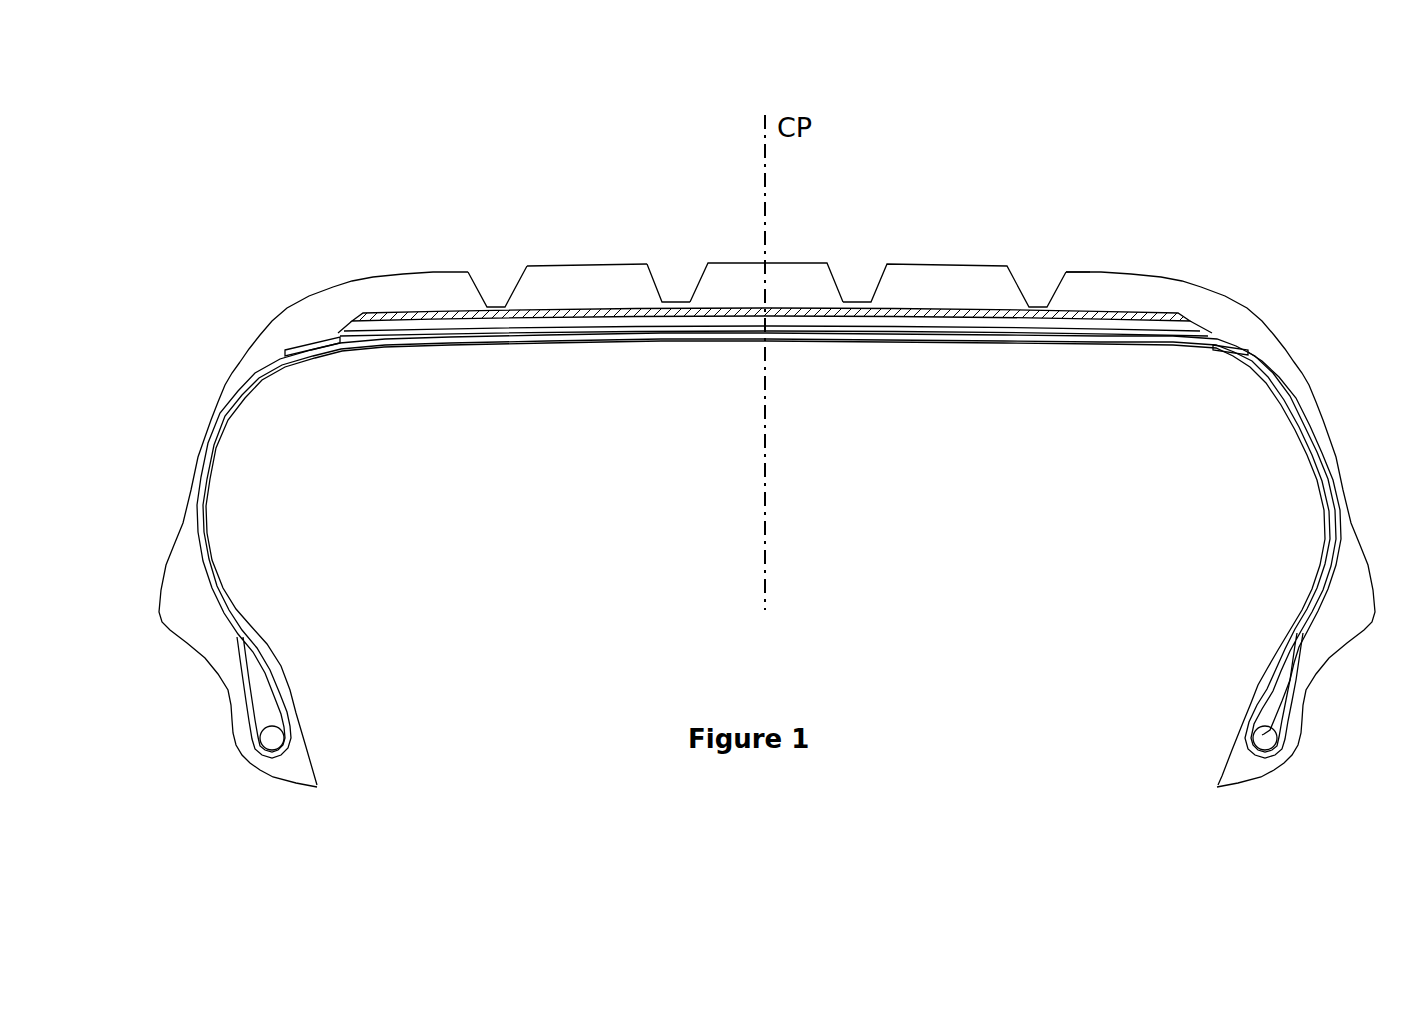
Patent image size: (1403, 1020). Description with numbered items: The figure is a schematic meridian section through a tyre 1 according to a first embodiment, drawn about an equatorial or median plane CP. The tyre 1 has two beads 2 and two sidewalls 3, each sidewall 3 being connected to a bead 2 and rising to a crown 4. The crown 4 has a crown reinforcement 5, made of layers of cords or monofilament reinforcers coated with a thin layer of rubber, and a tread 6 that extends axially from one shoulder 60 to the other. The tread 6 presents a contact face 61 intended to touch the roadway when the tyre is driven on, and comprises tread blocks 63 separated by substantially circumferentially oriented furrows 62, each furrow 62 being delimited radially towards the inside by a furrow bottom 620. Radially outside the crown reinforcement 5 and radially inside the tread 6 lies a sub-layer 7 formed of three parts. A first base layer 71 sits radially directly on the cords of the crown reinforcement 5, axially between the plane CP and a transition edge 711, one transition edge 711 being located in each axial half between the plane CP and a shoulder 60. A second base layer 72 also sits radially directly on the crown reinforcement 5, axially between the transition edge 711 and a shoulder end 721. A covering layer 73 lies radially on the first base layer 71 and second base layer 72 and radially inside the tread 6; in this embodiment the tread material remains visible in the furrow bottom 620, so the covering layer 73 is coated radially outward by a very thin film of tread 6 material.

The tyre 1 is at (283, 190).
The bead 2 is at (218, 713).
The sidewall 3 is at (193, 458).
The crown 4 is at (233, 343).
The crown reinforcement 5 is at (402, 333).
The tread 6 is at (385, 255).
The shoulder 60 is at (283, 300).
The contact face 61 is at (716, 260).
The furrow 62 is at (677, 283).
The furrow bottom 620 is at (502, 300).
The tread block 63 is at (562, 293).
The sub-layer 7 is at (638, 324).
The first base layer 71 is at (723, 319).
The transition edge 711 is at (588, 324).
The second base layer 72 is at (477, 320).
The shoulder end 721 is at (332, 344).
The covering layer 73 is at (535, 312).